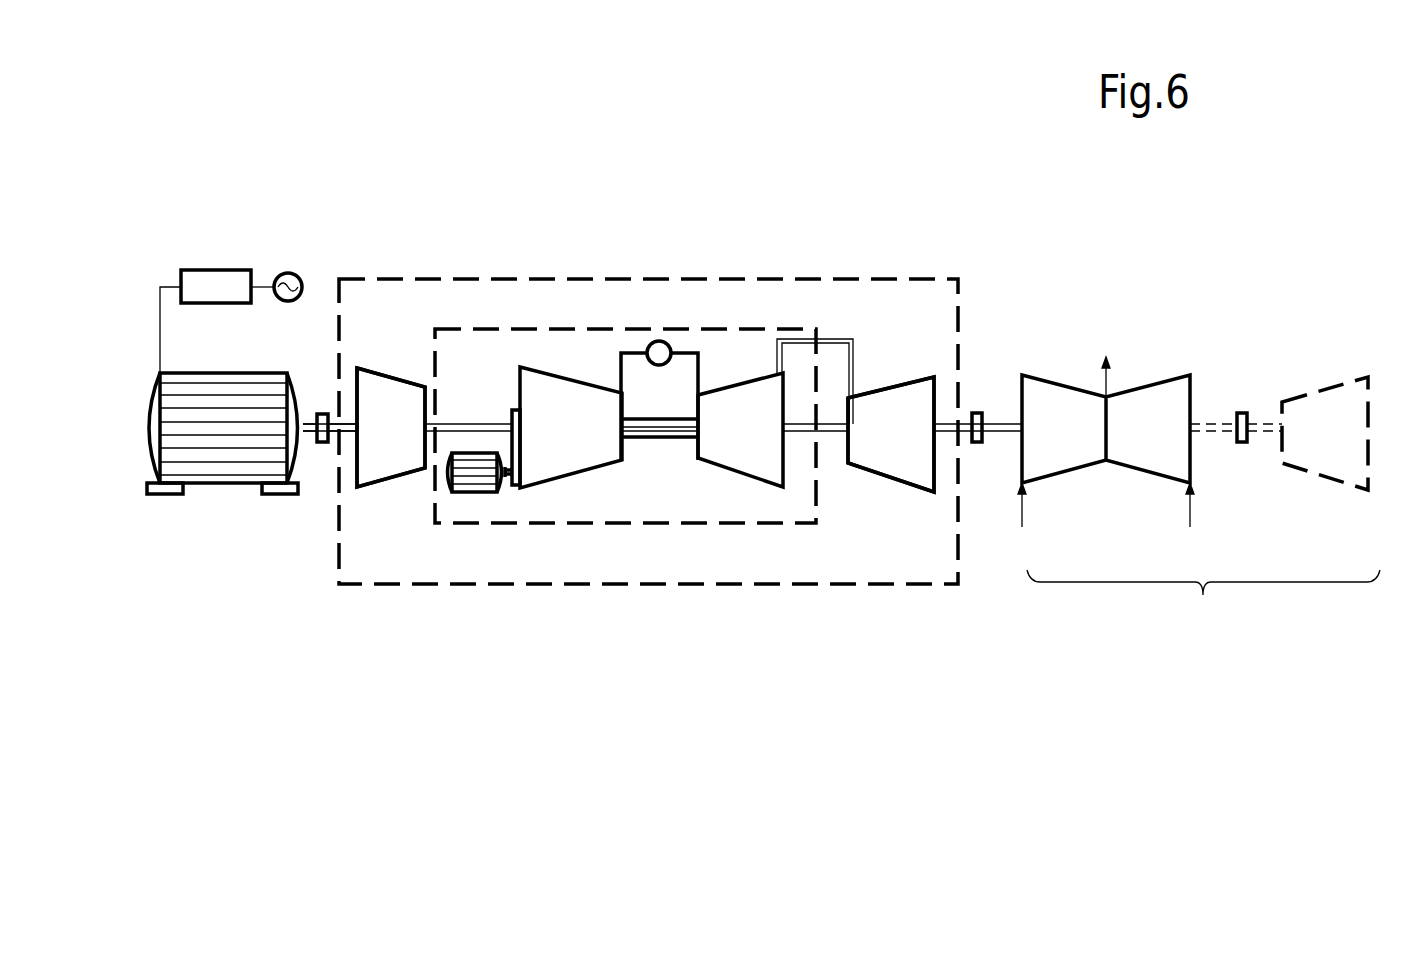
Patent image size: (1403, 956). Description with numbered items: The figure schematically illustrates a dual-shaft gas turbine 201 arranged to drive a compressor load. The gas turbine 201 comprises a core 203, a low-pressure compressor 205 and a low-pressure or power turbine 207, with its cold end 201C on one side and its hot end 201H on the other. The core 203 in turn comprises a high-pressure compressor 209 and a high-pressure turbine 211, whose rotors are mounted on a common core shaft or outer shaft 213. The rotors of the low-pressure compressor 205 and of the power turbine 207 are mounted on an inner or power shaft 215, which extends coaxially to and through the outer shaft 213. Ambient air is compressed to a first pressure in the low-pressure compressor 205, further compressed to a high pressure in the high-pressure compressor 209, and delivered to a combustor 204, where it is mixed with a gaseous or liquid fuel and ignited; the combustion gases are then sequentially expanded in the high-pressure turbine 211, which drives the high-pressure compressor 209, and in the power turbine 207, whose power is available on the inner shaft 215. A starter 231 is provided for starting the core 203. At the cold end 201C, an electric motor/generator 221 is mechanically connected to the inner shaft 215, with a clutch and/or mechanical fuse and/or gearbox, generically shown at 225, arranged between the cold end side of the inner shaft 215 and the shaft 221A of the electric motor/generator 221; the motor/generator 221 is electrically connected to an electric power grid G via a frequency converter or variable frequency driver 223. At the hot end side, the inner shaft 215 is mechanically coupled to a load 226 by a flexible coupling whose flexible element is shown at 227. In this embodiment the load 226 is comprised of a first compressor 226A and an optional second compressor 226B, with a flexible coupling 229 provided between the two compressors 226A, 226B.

The dual-shaft gas turbine 201 is at (748, 586).
The cold end 201C is at (353, 463).
The hot end 201H is at (940, 388).
The core 203 is at (570, 522).
The combustor 204 is at (667, 342).
The low-pressure compressor 205 is at (375, 421).
The low-pressure turbine 207 is at (879, 419).
The high-pressure compressor 209 is at (554, 419).
The high-pressure turbine 211 is at (717, 419).
The outer shaft 213 is at (668, 442).
The inner shaft 215 is at (343, 422).
The electric motor/generator 221 is at (160, 457).
The shaft of the electric motor/generator 221A is at (312, 420).
The variable frequency driver 223 is at (218, 270).
The clutch and/or mechanical fuse and/or gearbox 225 is at (323, 443).
The load 226 is at (1203, 598).
The first compressor 226A is at (1152, 371).
The second compressor 226B is at (1335, 412).
The flexible element 227 is at (977, 412).
The flexible coupling 229 is at (1245, 445).
The starter 231 is at (485, 488).
The electric power grid G is at (292, 272).